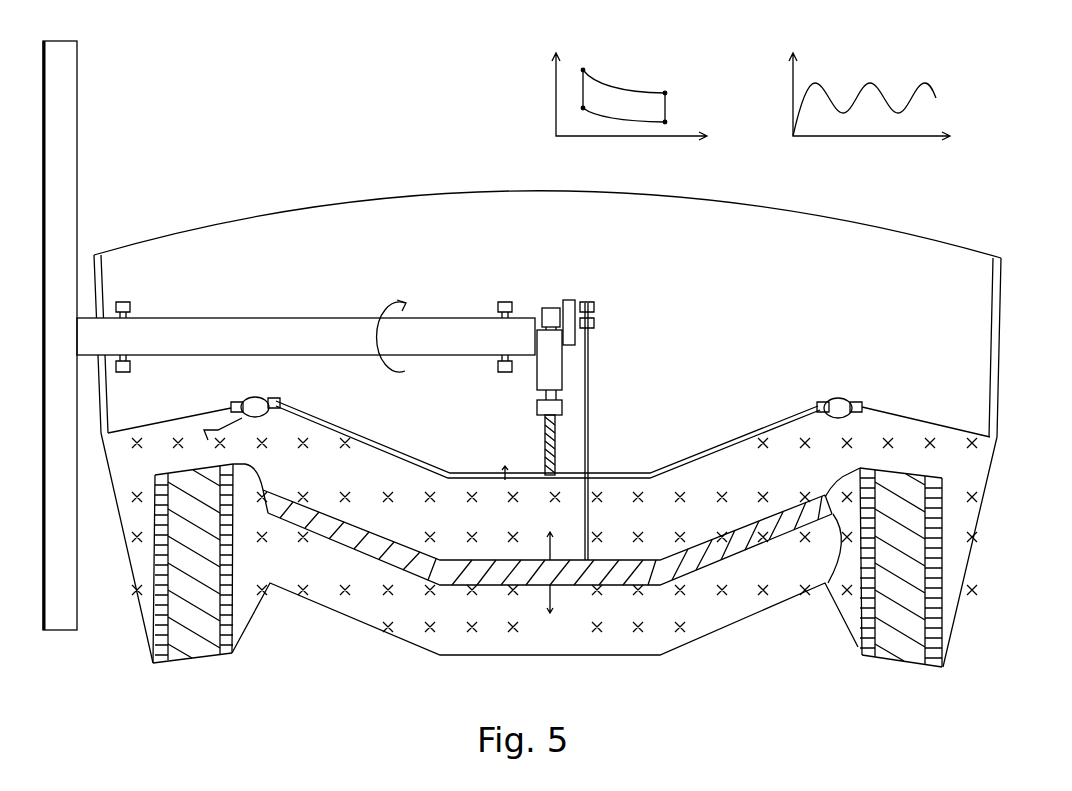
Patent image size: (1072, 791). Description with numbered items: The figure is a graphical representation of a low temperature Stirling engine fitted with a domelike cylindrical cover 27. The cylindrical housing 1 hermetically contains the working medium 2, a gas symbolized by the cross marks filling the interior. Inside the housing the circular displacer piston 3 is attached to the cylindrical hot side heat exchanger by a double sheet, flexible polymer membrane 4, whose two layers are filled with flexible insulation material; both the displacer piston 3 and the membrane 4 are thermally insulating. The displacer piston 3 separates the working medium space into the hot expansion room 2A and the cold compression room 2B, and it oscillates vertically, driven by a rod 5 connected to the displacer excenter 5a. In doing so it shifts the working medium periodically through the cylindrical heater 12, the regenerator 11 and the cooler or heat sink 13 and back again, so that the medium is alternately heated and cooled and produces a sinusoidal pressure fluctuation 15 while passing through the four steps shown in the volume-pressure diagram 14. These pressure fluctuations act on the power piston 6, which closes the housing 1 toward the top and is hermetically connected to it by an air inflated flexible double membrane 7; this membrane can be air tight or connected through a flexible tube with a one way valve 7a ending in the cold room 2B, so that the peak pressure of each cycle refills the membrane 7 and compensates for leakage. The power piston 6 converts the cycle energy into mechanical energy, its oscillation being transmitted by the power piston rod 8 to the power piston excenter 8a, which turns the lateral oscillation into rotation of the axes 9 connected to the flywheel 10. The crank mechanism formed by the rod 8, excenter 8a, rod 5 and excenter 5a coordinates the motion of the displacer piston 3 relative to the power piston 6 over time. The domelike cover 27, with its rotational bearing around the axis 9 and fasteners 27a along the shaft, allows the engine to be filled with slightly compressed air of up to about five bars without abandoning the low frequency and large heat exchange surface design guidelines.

The cylindrical housing 1 is at (962, 590).
The working medium 2 is at (785, 590).
The hot expansion room 2A is at (657, 622).
The cold compression room 2B is at (907, 445).
The displacer piston 3 is at (740, 528).
The flexible polymer membrane 4 is at (830, 545).
The rod 5 is at (590, 350).
The displacer excenter 5a is at (578, 305).
The power piston 6 is at (780, 415).
The flexible double membrane 7 is at (843, 400).
The one way valve 7a is at (227, 423).
The power piston rod 8 is at (558, 428).
The power piston excenter 8a is at (533, 310).
The axes 9 is at (265, 340).
The flywheel 10 is at (67, 102).
The regenerator 11 is at (895, 647).
The heater 12 is at (857, 645).
The cooler 13 is at (950, 648).
The volume-pressure diagram 14 is at (624, 104).
The sinusoidal pressure fluctuation 15 is at (861, 104).
The domelike cylindrical cover 27 is at (335, 203).
The casing fasteners 27a is at (117, 302).